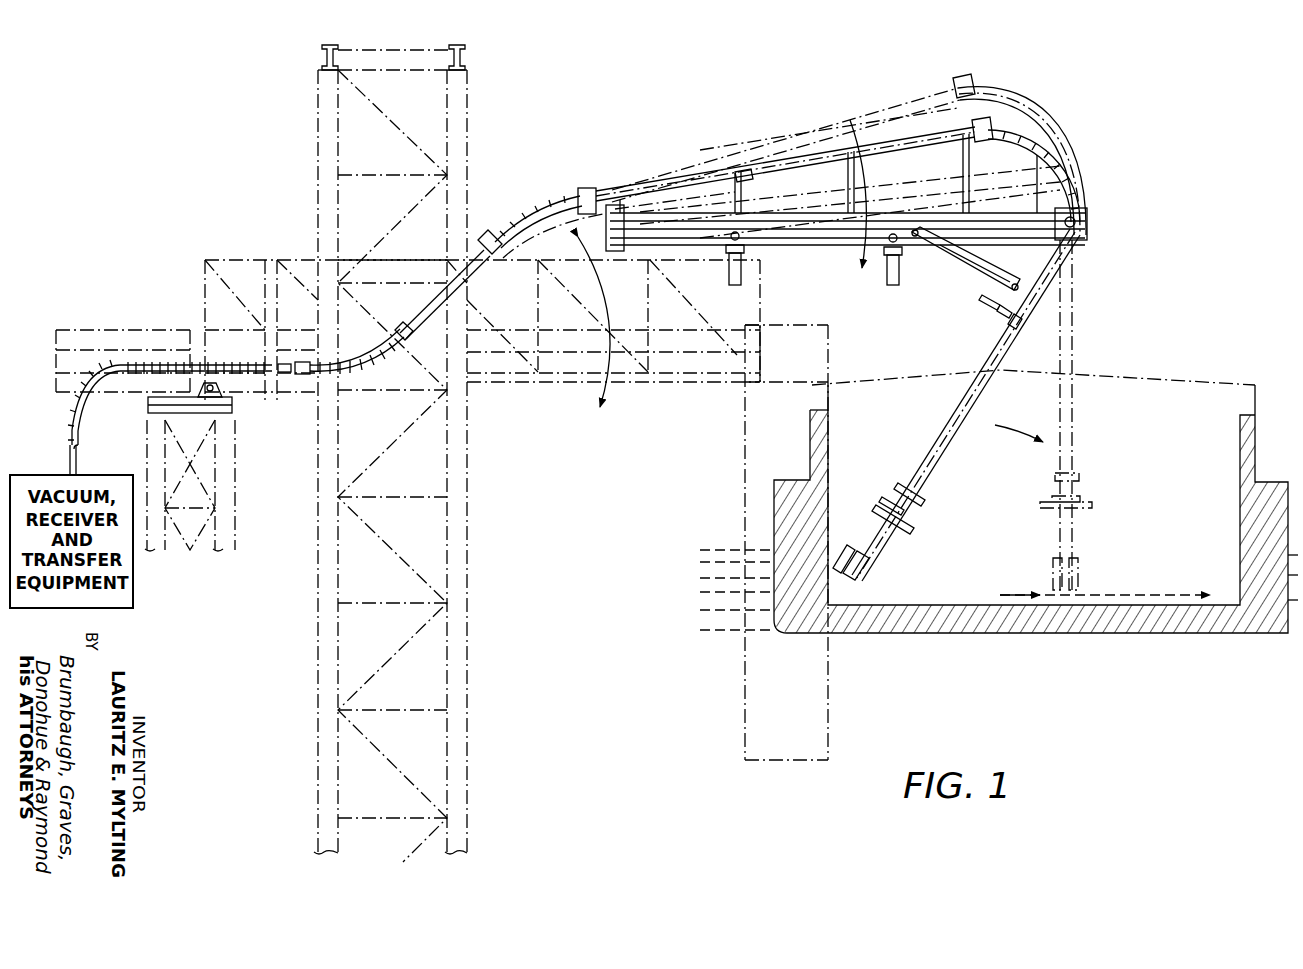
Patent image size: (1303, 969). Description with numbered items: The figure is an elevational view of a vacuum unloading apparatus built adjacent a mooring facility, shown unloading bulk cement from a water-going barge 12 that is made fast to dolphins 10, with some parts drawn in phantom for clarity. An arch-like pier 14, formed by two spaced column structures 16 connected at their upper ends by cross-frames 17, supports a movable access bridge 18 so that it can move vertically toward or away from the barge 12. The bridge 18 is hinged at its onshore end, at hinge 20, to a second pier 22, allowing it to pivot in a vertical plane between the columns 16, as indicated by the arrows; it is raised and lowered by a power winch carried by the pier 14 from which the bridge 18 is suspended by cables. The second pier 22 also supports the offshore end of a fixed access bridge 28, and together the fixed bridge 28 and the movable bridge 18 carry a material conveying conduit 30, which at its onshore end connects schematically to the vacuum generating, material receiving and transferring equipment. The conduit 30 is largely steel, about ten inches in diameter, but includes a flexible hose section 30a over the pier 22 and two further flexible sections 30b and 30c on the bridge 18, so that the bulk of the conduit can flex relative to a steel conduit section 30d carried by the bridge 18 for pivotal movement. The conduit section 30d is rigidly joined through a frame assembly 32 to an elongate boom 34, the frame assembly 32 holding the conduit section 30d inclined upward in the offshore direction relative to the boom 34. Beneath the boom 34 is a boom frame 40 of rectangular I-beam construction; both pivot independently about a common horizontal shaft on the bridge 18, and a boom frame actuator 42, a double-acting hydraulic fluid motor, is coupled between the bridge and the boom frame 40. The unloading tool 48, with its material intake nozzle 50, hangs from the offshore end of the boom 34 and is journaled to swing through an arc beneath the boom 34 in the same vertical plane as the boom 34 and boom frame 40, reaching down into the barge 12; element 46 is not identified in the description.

The dolphins 10 is at (832, 700).
The barge 12 is at (1222, 630).
The arch-like pier 14 is at (478, 534).
The column structures 16 is at (466, 607).
The cross-frames 17 is at (458, 44).
The access bridge 18 is at (632, 385).
The hinge 20 is at (216, 389).
The second pier 22 is at (246, 519).
The fixed access bridge 28 is at (116, 335).
The material conveying conduit 30 is at (100, 370).
The flexible hose section 30a is at (166, 362).
The flexible hose section 30b is at (350, 372).
The flexible hose section 30c is at (558, 206).
The steel conduit section 30d is at (810, 148).
The frame assembly 32 is at (965, 178).
The boom 34 is at (1020, 222).
The boom frame 40 is at (786, 244).
The boom frame actuator 42 is at (732, 268).
The cylinder 46 is at (897, 270).
The unloading tool 48 is at (930, 462).
The material intake nozzle 50 is at (912, 508).